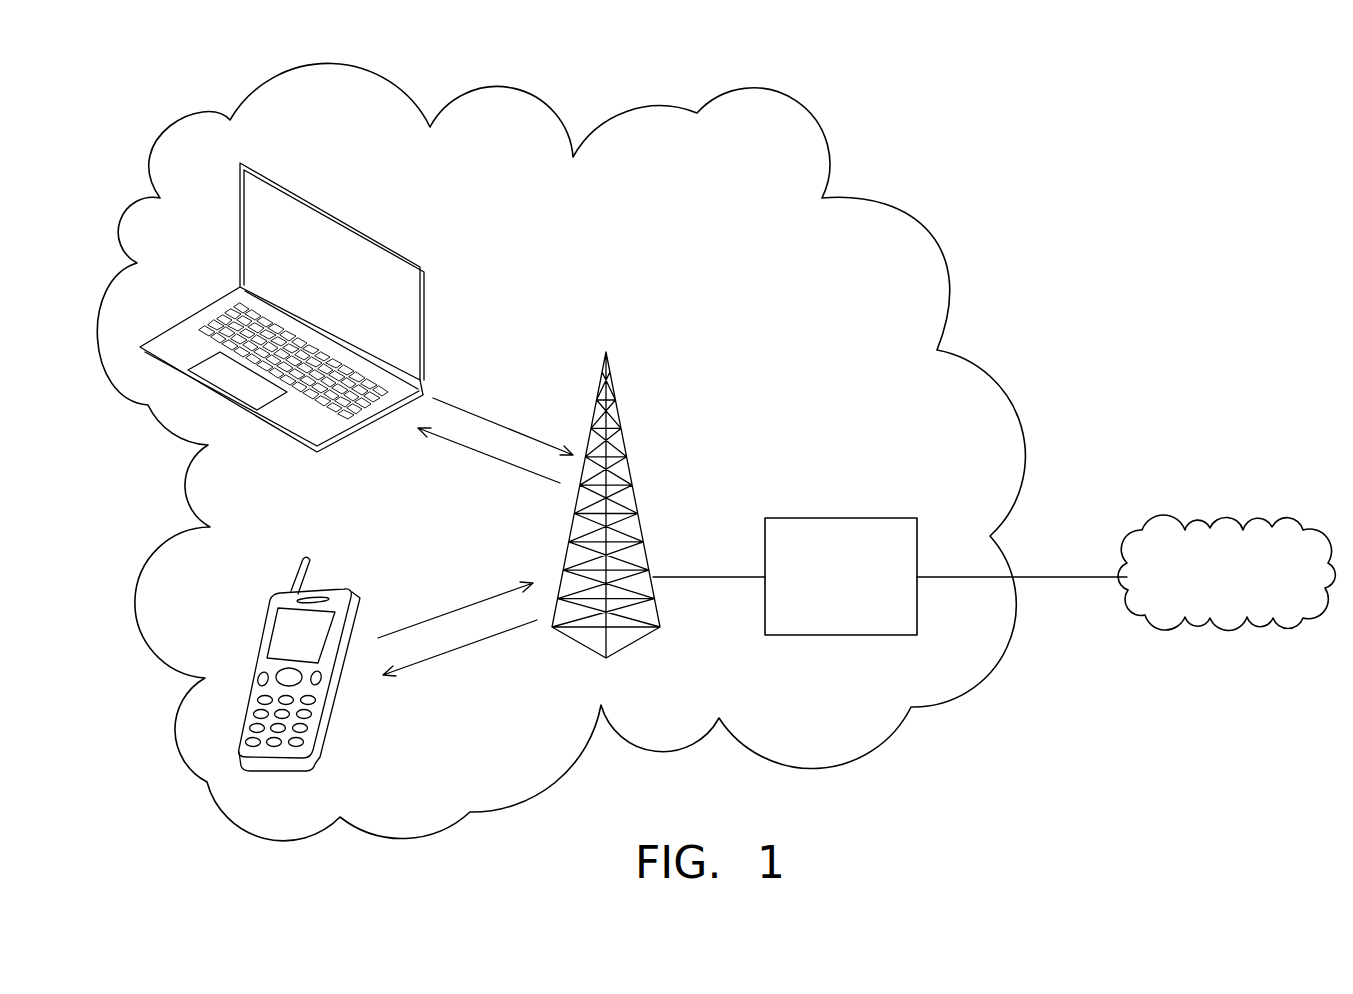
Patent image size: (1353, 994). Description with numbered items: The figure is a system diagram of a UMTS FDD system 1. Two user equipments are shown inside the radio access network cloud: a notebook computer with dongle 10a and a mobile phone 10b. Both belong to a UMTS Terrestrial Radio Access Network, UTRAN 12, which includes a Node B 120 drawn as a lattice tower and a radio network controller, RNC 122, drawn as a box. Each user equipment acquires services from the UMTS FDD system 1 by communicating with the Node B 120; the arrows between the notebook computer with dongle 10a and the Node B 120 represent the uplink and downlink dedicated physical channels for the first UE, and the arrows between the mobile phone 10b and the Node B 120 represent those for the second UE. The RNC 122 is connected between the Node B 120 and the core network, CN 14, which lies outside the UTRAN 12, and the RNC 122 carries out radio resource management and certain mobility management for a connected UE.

The UMTS FDD system 1 is at (1177, 139).
The notebook computer with dongle 10a is at (425, 288).
The mobile phone 10b is at (328, 732).
The UMTS Terrestrial Radio Access Network (UTRAN) 12 is at (940, 258).
The Node B 120 is at (628, 447).
The radio network controller (RNC) 122 is at (838, 518).
The core network (CN) 14 is at (1226, 517).